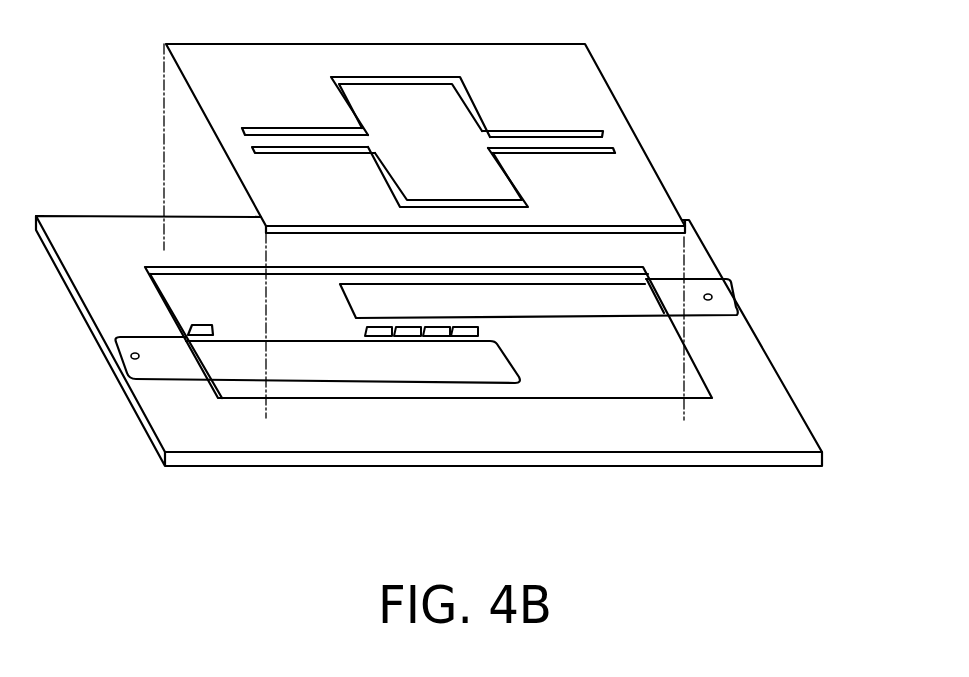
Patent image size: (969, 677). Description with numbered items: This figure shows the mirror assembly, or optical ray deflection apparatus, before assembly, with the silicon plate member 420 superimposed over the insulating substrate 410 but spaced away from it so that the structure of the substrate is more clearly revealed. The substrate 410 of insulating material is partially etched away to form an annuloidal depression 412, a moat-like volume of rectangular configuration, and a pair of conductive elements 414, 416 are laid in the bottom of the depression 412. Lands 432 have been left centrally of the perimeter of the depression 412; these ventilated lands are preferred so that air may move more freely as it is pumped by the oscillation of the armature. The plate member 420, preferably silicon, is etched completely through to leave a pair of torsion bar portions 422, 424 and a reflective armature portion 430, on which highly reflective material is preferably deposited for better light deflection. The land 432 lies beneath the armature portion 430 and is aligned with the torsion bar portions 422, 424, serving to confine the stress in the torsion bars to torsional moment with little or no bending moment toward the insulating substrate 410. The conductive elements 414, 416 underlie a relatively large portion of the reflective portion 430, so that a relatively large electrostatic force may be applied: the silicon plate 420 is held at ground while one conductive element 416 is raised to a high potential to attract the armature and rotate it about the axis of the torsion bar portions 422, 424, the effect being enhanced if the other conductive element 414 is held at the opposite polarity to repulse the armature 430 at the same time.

The substrate 410 is at (587, 460).
The annuloidal depression 412 is at (248, 312).
The conductive element 414 is at (168, 368).
The conductive element 416 is at (709, 288).
The plate member 420 is at (638, 172).
The torsion bar portion 422 is at (277, 140).
The torsion bar portion 424 is at (576, 142).
The reflective armature portion 430 is at (460, 151).
The land 432 is at (500, 330).